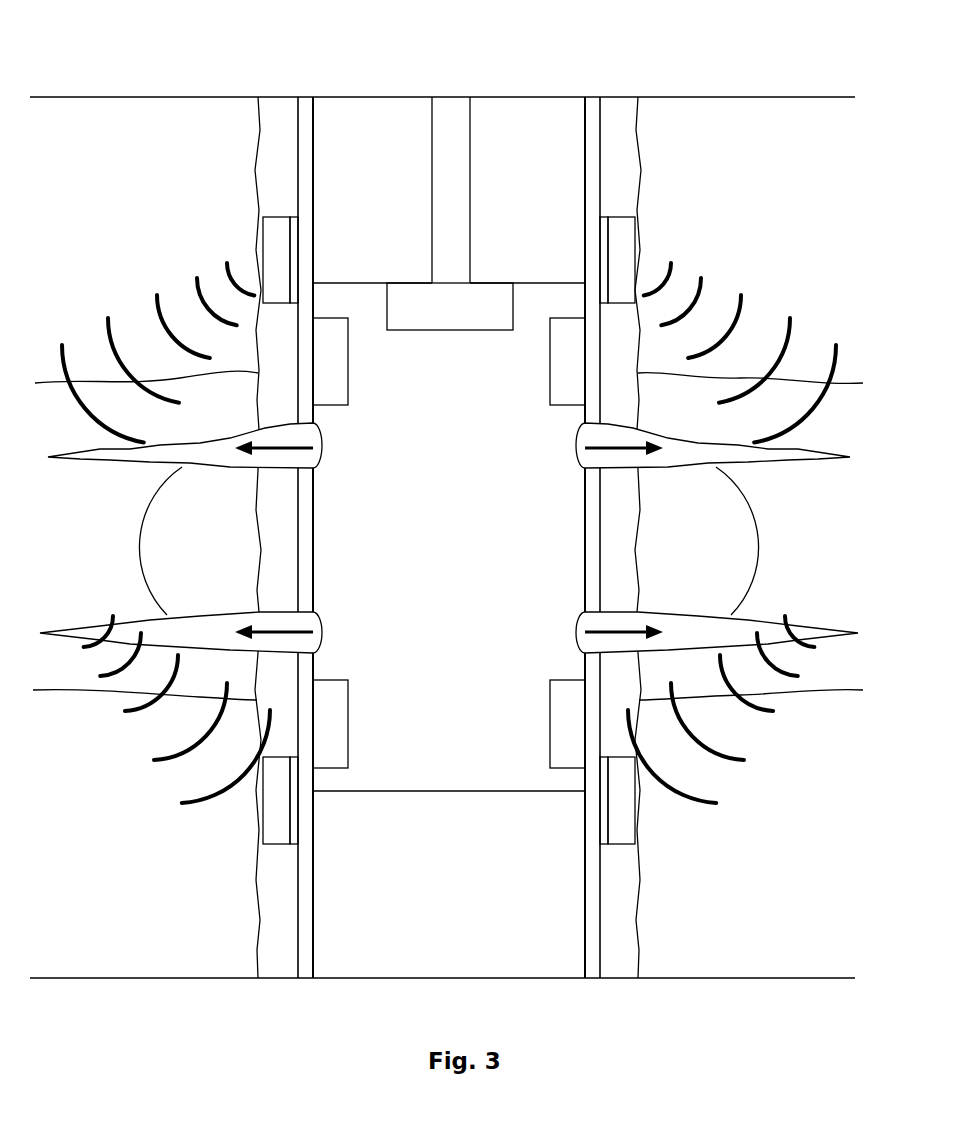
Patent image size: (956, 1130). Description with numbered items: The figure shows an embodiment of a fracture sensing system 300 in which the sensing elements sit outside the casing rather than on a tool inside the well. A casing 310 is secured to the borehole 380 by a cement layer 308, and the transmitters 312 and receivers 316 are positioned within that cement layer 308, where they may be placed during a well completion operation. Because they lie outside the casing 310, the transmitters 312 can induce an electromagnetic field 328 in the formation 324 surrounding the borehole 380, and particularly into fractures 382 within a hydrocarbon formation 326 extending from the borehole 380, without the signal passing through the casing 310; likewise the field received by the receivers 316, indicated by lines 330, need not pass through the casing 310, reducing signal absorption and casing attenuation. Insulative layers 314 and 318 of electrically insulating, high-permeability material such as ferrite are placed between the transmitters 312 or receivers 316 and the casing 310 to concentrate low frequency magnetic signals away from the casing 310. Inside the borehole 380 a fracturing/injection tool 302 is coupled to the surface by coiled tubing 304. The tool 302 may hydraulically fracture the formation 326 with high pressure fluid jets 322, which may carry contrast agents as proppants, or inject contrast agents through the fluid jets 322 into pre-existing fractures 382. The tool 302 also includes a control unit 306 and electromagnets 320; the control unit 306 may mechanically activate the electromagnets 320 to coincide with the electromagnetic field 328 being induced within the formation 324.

The fracture sensing system 300 is at (493, 441).
The fracturing/injection tool 302 is at (447, 791).
The coiled tubing 304 is at (442, 105).
The control unit 306 is at (470, 317).
The cement layer 308 is at (275, 105).
The casing 310 is at (305, 97).
The transmitters 312 is at (275, 217).
The insulative layer 314 is at (293, 217).
The receivers 316 is at (273, 846).
The insulative layer 318 is at (292, 846).
The electromagnets 320 is at (550, 380).
The high pressure fluid jets 322 is at (288, 468).
The formation 324 is at (816, 203).
The hydrocarbon formation 326 is at (841, 510).
The electromagnetic field 328 is at (158, 315).
The lines indicating received electromagnetic field 330 is at (138, 707).
The borehole 380 is at (258, 110).
The fractures 382 is at (446, 541).